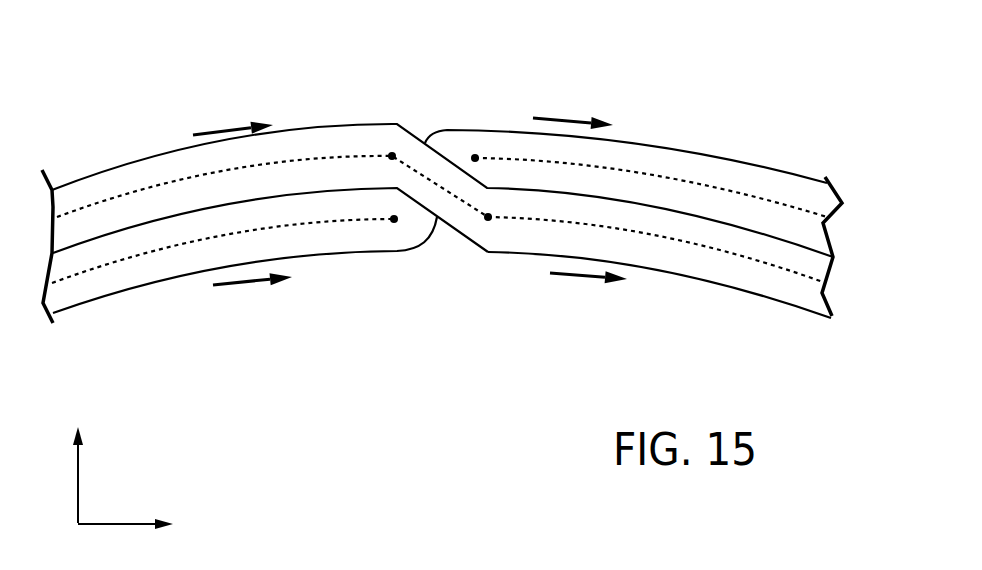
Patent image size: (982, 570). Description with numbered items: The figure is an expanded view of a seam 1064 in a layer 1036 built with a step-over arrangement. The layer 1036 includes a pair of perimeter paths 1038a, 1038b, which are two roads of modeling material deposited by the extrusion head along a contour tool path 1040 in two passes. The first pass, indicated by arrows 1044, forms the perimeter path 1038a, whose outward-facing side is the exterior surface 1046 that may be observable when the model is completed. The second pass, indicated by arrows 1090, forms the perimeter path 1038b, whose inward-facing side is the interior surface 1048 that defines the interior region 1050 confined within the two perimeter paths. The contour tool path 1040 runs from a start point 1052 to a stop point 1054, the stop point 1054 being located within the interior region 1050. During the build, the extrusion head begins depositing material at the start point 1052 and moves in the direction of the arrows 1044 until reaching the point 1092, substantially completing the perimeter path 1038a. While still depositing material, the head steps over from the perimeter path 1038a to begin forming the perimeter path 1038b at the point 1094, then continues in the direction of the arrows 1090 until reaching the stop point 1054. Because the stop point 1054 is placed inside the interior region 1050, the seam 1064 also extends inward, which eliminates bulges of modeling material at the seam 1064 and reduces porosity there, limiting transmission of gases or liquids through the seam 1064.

The layer 1036 is at (701, 36).
The perimeter path 1038a is at (650, 127).
The perimeter path 1038b is at (670, 291).
The contour tool path 1040 is at (145, 190).
The arrows 1044 is at (202, 128).
The exterior surface 1046 is at (695, 152).
The interior surface 1048 is at (725, 287).
The interior region 1050 is at (357, 471).
The start point 1052 is at (475, 158).
The stop point 1054 is at (394, 219).
The seam 1064 is at (423, 108).
The arrows 1090 is at (222, 287).
The point 1092 is at (392, 156).
The point 1094 is at (488, 217).